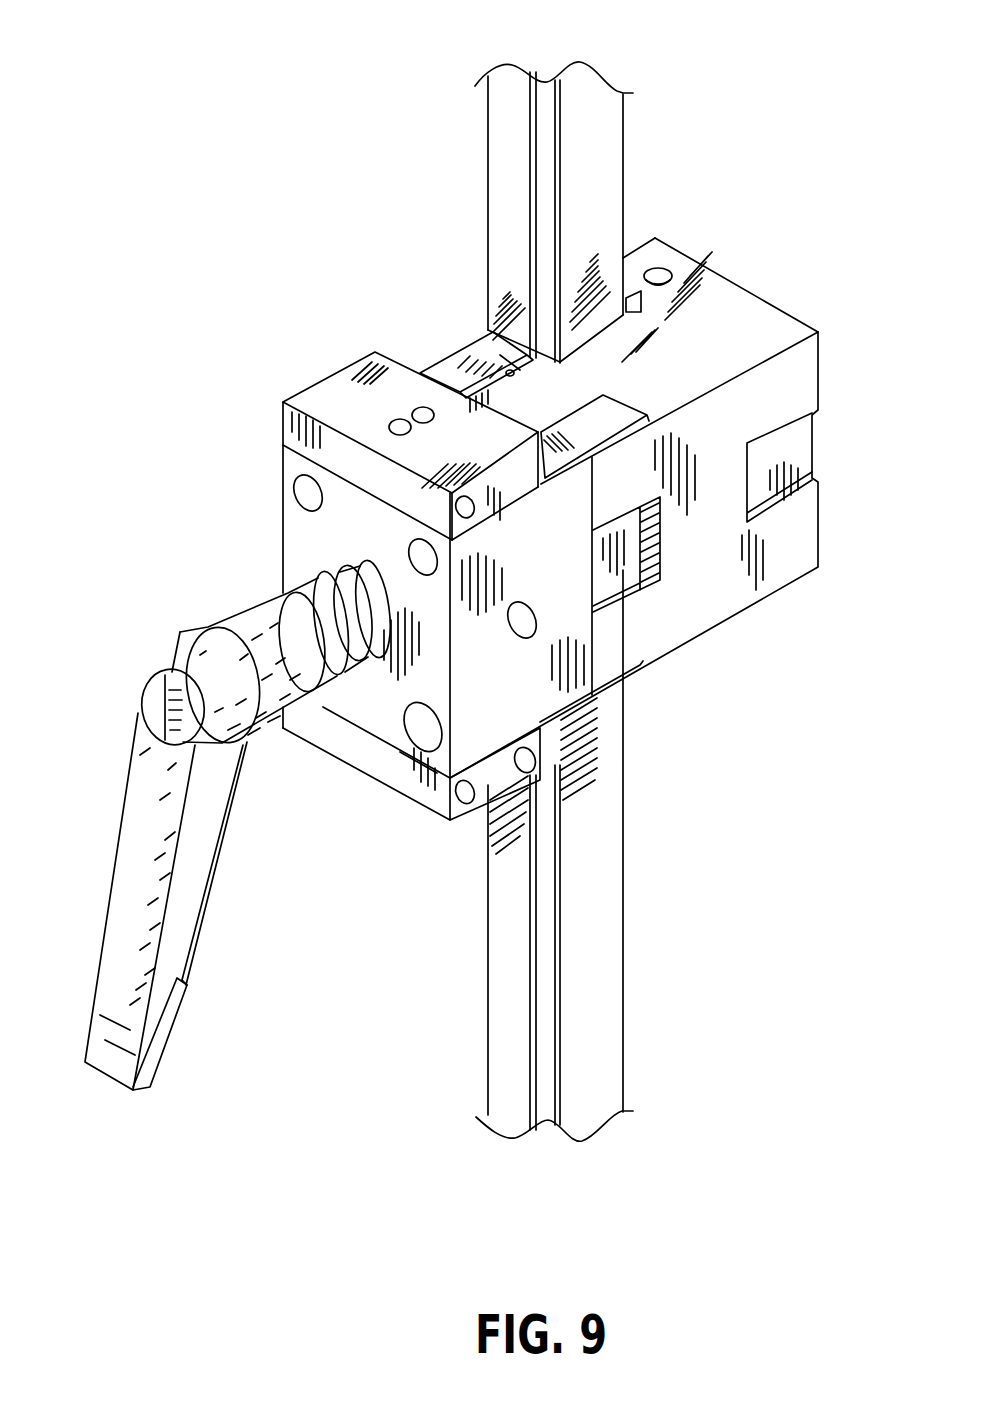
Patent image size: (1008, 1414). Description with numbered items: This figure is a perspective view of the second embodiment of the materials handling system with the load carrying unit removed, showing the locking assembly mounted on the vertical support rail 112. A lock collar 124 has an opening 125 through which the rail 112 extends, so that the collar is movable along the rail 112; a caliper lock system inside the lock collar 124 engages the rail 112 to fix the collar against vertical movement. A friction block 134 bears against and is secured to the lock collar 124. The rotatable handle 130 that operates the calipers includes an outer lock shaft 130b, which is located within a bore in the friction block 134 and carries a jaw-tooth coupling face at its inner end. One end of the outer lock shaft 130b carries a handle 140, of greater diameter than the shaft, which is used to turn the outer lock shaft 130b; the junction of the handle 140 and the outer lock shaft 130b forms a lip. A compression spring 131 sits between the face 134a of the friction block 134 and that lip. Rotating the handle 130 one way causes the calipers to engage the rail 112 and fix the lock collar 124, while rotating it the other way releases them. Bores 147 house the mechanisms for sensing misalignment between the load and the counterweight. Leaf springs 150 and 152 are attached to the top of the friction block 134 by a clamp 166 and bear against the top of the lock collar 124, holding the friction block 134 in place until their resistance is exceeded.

The vertical support rail 112 is at (598, 91).
The lock collar 124 is at (712, 318).
The opening 125 is at (627, 302).
The rotatable handle 130 is at (183, 617).
The outer lock shaft 130b is at (315, 582).
The compression spring 131 is at (283, 587).
The friction block 134 is at (540, 665).
The face of friction block 134a is at (375, 707).
The handle 140 is at (110, 1052).
The bores 147 is at (426, 568).
The leaf spring 150 is at (462, 376).
The leaf spring 152 is at (597, 426).
The clamp 166 is at (345, 390).